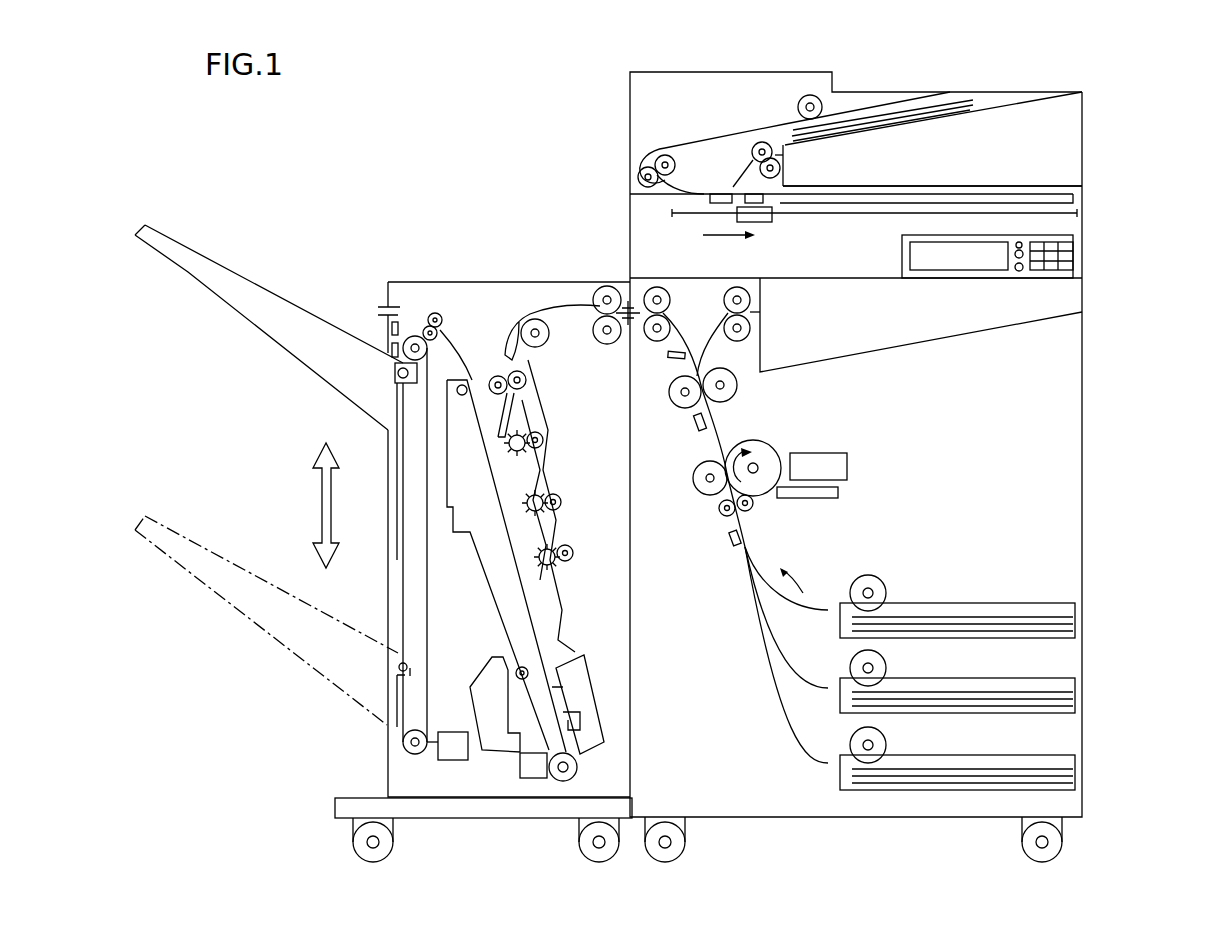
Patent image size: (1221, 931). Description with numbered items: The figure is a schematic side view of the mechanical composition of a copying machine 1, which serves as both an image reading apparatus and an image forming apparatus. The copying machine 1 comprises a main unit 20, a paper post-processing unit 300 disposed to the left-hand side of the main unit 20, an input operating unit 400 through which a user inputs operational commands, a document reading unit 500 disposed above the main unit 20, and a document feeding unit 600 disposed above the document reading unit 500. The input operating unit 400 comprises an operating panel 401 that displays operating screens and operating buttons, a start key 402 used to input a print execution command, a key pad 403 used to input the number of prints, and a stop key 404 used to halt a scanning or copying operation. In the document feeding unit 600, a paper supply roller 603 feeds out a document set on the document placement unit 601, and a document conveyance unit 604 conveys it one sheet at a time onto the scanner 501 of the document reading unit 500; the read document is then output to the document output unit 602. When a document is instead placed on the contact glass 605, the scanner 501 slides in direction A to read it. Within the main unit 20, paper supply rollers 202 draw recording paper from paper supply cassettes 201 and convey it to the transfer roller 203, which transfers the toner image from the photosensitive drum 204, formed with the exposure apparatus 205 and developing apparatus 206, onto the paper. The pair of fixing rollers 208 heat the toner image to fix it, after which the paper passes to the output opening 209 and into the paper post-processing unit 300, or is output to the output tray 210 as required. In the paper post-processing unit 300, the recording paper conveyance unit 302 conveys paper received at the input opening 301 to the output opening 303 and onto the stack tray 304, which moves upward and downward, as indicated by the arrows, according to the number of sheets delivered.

The copying machine 1 is at (516, 130).
The main unit 20 is at (1060, 434).
The paper supply cassette 201 is at (1076, 610).
The paper supply roller 202 is at (887, 597).
The transfer roller 203 is at (700, 488).
The photosensitive drum 204 is at (763, 483).
The exposure apparatus 205 is at (840, 492).
The developing apparatus 206 is at (848, 468).
The fixing rollers 208 is at (685, 403).
The output opening 209 is at (657, 287).
The output tray 210 is at (1000, 330).
The paper post-processing unit 300 is at (410, 268).
The input opening 301 is at (605, 285).
The recording paper conveyance unit 302 is at (543, 306).
The output opening 303 is at (380, 307).
The stack tray 304 is at (307, 383).
The input operating unit 400 is at (1093, 254).
The operating panel 401 is at (917, 258).
The start key 402 is at (1019, 274).
The key pad 403 is at (1048, 272).
The stop key 404 is at (1060, 243).
The document reading unit 500 is at (1093, 199).
The scanner 501 is at (763, 221).
The document feeding unit 600 is at (908, 88).
The document placement unit 601 is at (1003, 100).
The document output unit 602 is at (948, 183).
The paper supply roller 603 is at (822, 107).
The document conveyance unit 604 is at (700, 138).
The contact glass 605 is at (1050, 186).